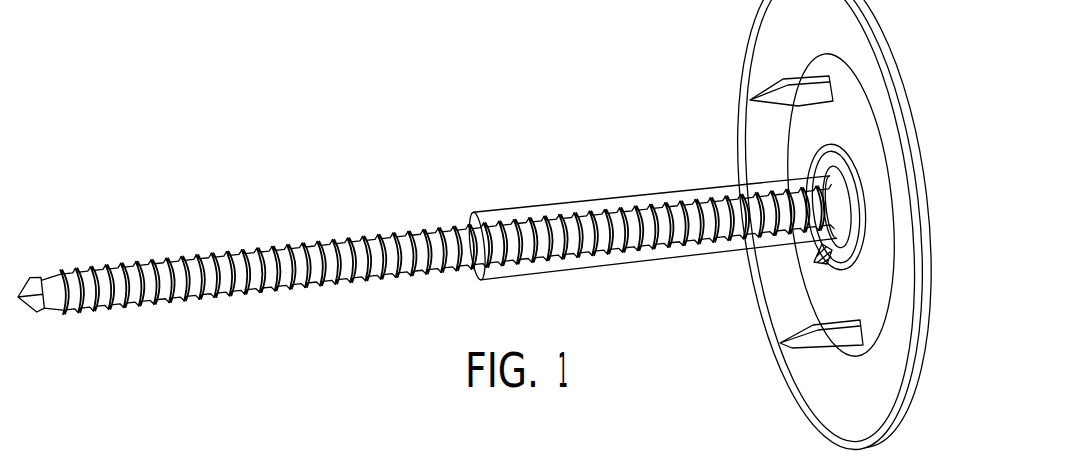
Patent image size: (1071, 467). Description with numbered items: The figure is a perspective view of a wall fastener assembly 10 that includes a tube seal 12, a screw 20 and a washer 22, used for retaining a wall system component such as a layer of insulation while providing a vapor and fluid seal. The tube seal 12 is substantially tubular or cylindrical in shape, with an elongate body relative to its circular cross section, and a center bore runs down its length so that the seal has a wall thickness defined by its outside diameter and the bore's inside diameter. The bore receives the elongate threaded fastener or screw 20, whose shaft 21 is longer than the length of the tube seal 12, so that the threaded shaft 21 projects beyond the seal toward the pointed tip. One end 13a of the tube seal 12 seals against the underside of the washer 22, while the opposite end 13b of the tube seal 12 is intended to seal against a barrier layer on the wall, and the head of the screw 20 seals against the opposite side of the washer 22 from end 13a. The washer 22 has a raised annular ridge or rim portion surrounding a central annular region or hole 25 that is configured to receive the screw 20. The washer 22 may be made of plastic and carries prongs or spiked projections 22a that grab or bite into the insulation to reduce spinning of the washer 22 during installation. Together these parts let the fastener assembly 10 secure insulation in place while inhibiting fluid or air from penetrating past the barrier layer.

The fastener assembly 10 is at (182, 92).
The tube seal 12 is at (568, 203).
The one end of tube seal 13a is at (835, 176).
The opposite end of tube seal 13b is at (474, 214).
The screw 20 is at (155, 257).
The shaft 21 is at (217, 298).
The washer 22 is at (762, 23).
The spiked projections 22a is at (780, 97).
The hole 25 is at (817, 267).